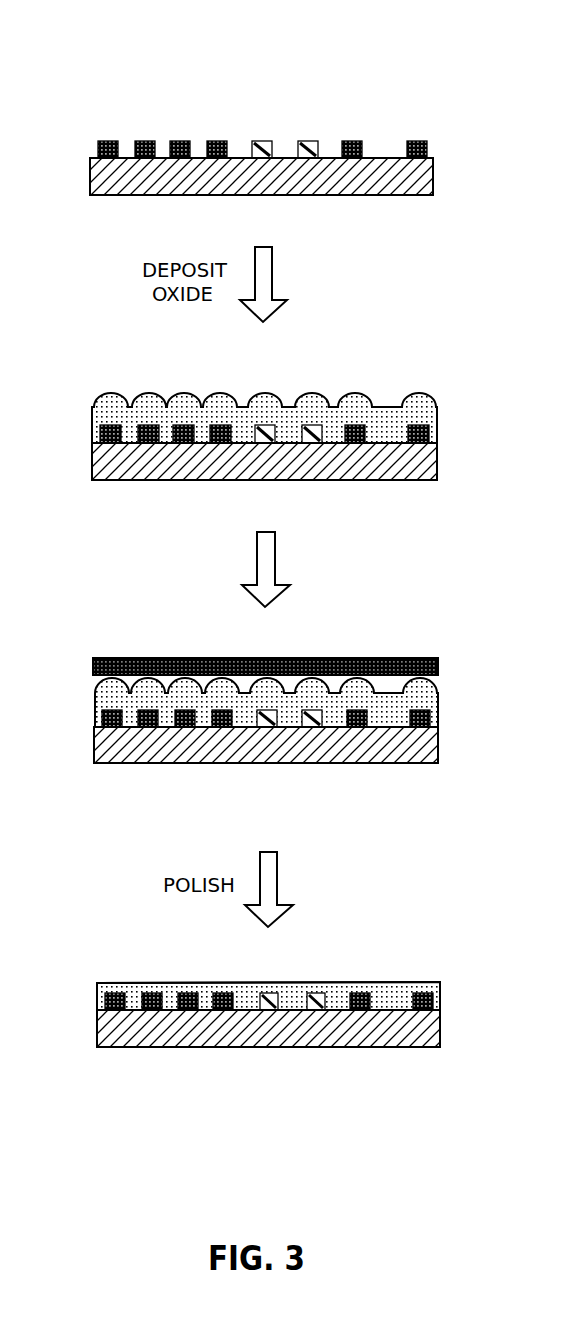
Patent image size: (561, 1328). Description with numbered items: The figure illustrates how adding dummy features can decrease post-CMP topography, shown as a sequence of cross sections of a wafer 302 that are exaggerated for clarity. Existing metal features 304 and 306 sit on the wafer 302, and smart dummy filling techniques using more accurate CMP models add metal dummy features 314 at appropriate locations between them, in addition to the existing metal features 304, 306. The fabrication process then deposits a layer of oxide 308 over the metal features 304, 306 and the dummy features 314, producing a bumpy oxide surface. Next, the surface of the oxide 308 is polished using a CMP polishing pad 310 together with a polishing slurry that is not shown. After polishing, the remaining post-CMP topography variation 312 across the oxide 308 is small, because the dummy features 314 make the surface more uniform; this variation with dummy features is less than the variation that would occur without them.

The wafer 302 is at (137, 1083).
The metal features 304 is at (227, 125).
The metal features 306 is at (423, 125).
The oxide 308 is at (97, 997).
The CMP polishing pad 310 is at (310, 657).
The post-CMP topography variation 312 is at (336, 948).
The metal dummy features 314 is at (318, 125).